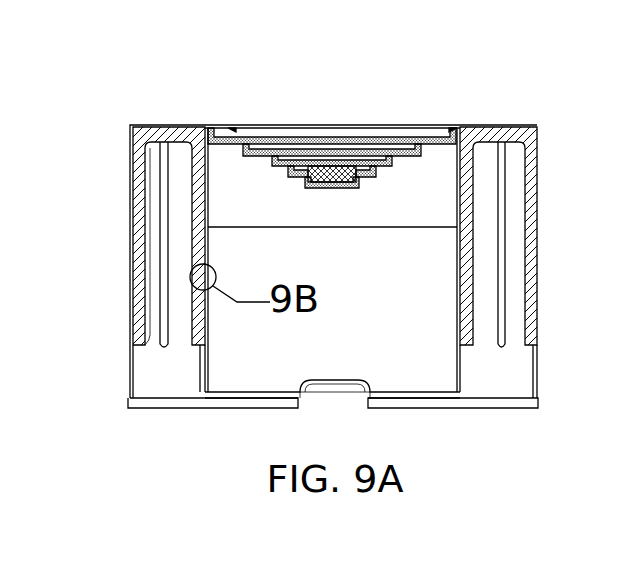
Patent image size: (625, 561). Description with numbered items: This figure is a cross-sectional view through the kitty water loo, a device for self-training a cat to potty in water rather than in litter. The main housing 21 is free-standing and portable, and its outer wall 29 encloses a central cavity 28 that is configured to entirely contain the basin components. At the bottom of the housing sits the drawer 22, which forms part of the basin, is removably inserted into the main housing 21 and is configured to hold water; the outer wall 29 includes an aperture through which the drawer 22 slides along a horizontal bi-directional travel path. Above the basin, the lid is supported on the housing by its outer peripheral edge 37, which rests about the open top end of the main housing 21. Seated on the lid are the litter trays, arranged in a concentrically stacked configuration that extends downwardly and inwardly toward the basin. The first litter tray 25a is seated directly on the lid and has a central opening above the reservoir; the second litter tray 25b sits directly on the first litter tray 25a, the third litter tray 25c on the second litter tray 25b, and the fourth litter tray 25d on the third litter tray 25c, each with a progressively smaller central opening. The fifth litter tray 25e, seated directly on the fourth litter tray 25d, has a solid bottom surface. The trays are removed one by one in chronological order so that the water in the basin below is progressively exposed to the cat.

The main housing 21 is at (130, 293).
The drawer 22 is at (235, 398).
The first litter tray 25a is at (228, 140).
The second litter tray 25b is at (266, 152).
The third litter tray 25c is at (282, 162).
The fourth litter tray 25d is at (372, 170).
The fifth litter tray 25e is at (340, 172).
The central cavity 28 is at (228, 195).
The outer wall 29 is at (130, 190).
The outer peripheral edge 37 is at (497, 130).